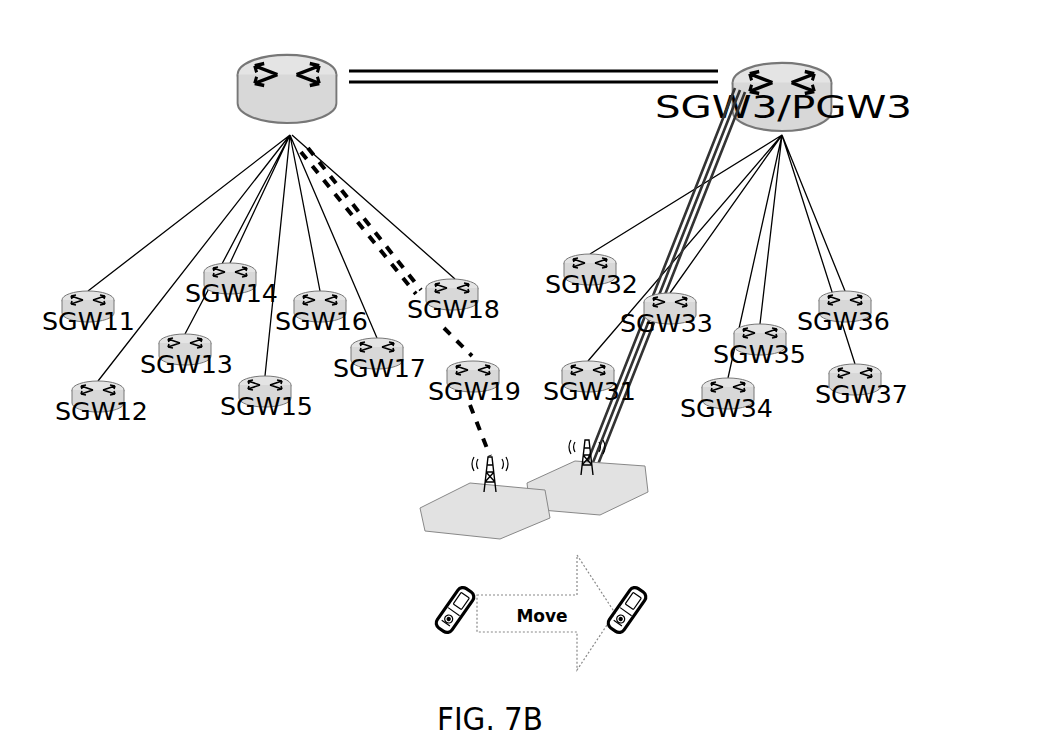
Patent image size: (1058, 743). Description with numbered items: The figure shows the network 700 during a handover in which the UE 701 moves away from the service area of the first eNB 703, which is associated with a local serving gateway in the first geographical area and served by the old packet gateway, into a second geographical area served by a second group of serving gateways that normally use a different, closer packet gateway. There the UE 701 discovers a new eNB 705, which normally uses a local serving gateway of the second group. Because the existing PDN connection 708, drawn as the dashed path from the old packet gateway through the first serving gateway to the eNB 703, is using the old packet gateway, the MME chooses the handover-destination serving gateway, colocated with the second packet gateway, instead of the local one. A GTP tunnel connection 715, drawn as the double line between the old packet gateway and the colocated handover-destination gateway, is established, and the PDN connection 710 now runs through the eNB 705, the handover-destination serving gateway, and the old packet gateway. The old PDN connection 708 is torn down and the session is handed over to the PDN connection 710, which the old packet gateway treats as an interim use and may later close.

The network 700 is at (130, 103).
The UE 701 is at (453, 641).
The eNB 703 is at (486, 492).
The eNB 705 is at (604, 478).
The PDN connection 708 is at (392, 229).
The PDN connection 710 is at (652, 231).
The GTP tunnel connection 715 is at (533, 70).